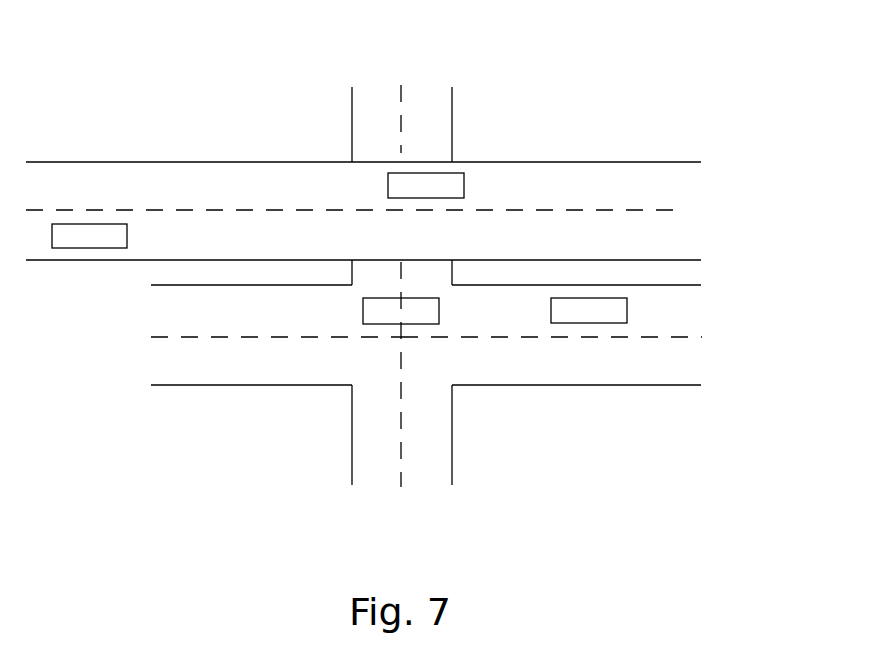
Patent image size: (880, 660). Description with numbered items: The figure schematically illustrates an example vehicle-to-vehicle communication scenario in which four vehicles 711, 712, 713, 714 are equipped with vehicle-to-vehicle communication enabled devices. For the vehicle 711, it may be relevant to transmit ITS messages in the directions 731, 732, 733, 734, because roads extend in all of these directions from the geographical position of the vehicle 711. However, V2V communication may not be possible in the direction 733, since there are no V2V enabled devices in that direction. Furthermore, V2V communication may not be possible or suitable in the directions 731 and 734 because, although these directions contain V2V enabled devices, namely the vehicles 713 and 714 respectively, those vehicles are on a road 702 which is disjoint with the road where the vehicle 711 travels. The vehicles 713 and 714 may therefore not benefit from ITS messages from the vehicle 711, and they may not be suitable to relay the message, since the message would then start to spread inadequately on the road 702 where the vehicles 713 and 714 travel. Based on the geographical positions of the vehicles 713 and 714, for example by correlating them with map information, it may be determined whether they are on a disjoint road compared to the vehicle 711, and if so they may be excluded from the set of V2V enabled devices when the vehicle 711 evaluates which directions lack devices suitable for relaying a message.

The road 702 is at (501, 161).
The vehicle 711 is at (401, 311).
The vehicle 712 is at (589, 310).
The vehicle 713 is at (426, 185).
The vehicle 714 is at (89, 236).
The direction 731 is at (401, 40).
The direction 732 is at (762, 337).
The direction 733 is at (401, 542).
The direction 734 is at (90, 337).